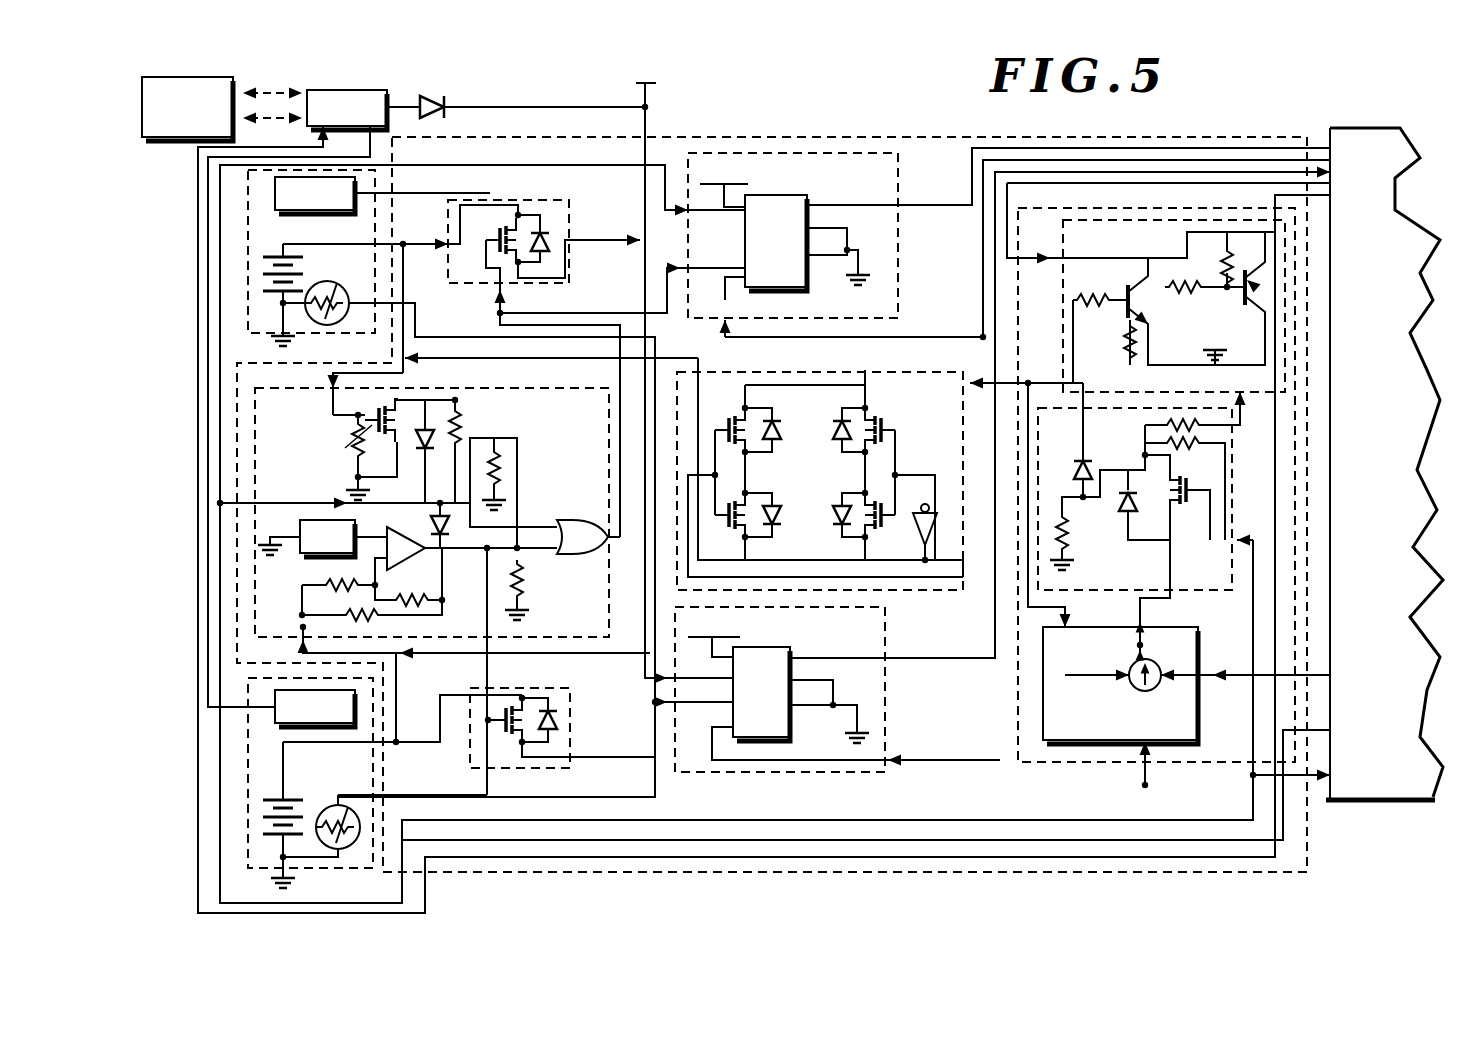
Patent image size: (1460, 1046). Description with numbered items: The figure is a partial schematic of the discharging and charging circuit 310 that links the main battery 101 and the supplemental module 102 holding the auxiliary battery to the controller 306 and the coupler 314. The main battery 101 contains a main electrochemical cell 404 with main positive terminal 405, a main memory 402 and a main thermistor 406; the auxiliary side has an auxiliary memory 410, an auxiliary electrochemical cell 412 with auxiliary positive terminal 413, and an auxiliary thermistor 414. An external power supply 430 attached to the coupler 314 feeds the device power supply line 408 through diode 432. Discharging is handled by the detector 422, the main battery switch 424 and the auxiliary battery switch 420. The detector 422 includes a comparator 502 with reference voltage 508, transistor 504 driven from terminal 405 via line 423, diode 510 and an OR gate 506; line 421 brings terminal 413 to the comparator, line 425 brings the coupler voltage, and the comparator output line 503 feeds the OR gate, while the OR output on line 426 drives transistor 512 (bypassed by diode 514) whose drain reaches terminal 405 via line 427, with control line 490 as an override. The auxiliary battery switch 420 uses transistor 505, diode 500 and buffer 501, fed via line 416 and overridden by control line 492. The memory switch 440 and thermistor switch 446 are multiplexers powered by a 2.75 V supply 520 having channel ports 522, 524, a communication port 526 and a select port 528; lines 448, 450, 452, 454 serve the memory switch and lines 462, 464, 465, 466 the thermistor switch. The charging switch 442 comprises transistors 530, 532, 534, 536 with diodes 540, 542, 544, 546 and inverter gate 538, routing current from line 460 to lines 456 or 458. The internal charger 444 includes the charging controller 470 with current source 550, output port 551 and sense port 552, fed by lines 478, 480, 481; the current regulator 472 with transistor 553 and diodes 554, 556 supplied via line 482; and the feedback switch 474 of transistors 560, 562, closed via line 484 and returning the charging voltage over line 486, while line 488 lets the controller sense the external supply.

The main battery 101 is at (246, 292).
The supplemental module 102 is at (250, 865).
The controller 306 is at (1366, 126).
The discharging and charging circuit 310 is at (1038, 144).
The coupler 314 is at (330, 88).
The main memory 402 is at (325, 220).
The main electrochemical cell 404 is at (244, 250).
The main positive terminal 405 is at (264, 247).
The main thermistor 406 is at (358, 284).
The device power supply line 408 is at (622, 74).
The auxiliary memory 410 is at (262, 702).
The auxiliary electrochemical cell 412 is at (244, 794).
The auxiliary positive terminal 413 is at (264, 789).
The auxiliary thermistor 414 is at (364, 844).
The line 416 is at (396, 742).
The auxiliary battery switch 420 is at (536, 768).
The line 421 is at (388, 660).
The detector 422 is at (517, 388).
The line 423 is at (414, 336).
The main battery switch 424 is at (570, 272).
The line 425 is at (260, 502).
The line 426 is at (608, 390).
The line 427 is at (388, 238).
The external power supply 430 is at (172, 76).
The diode 432 is at (432, 98).
The memory switch 440 is at (808, 152).
The charging switch 442 is at (882, 592).
The internal charger 444 is at (1030, 763).
The thermistor switch 446 is at (886, 712).
The line 448 is at (463, 198).
The line 450 is at (462, 172).
The line 452 is at (888, 337).
The line 454 is at (898, 213).
The line 456 is at (448, 362).
The line 458 is at (618, 604).
The line 460 is at (1063, 280).
The line 462 is at (442, 364).
The line 464 is at (464, 794).
The line 465 is at (906, 759).
The line 466 is at (902, 658).
The charging controller 470 is at (1048, 756).
The current regulator 472 is at (1232, 570).
The feedback switch 474 is at (1063, 236).
The line 478 is at (1158, 775).
The line 480 is at (1217, 680).
The line 481 is at (1054, 608).
The line 482 is at (1240, 646).
The line 484 is at (1254, 404).
The line 486 is at (227, 148).
The line 488 is at (1310, 785).
The control line 490 is at (566, 314).
The control line 492 is at (490, 822).
The diode 500 is at (560, 726).
The buffer 501 is at (431, 526).
The comparator 502 is at (425, 577).
The output line 503 is at (448, 548).
The transistor 504 is at (348, 444).
The transistor 505 is at (504, 708).
The OR gate 506 is at (588, 520).
The reference voltage 508 is at (306, 563).
The diode 510 is at (458, 424).
The transistor 512 is at (494, 276).
The diode 514 is at (548, 236).
The 2.75 V supply 520 is at (722, 172).
The first channel port 522 is at (728, 210).
The second channel port 524 is at (770, 265).
The communication port 526 is at (806, 206).
The select port 528 is at (737, 277).
The transistor 530 is at (712, 418).
The transistor 532 is at (730, 510).
The transistor 534 is at (895, 424).
The transistor 536 is at (890, 485).
The inverter gate 538 is at (925, 560).
The diode 540 is at (772, 410).
The diode 542 is at (776, 534).
The diode 544 is at (836, 439).
The diode 546 is at (842, 506).
The controlled current source 550 is at (1161, 684).
The output port 551 is at (1140, 624).
The sense port 552 is at (1140, 647).
The transistor 553 is at (1188, 518).
The diode 554 is at (1122, 518).
The diode 556 is at (1082, 462).
The transistor 560 is at (1136, 302).
The transistor 562 is at (1242, 308).